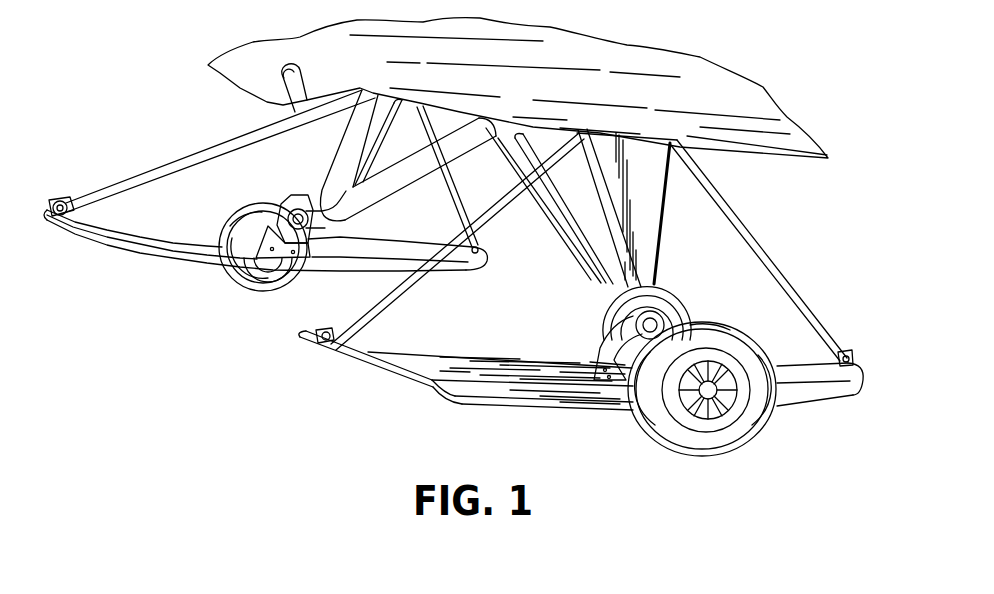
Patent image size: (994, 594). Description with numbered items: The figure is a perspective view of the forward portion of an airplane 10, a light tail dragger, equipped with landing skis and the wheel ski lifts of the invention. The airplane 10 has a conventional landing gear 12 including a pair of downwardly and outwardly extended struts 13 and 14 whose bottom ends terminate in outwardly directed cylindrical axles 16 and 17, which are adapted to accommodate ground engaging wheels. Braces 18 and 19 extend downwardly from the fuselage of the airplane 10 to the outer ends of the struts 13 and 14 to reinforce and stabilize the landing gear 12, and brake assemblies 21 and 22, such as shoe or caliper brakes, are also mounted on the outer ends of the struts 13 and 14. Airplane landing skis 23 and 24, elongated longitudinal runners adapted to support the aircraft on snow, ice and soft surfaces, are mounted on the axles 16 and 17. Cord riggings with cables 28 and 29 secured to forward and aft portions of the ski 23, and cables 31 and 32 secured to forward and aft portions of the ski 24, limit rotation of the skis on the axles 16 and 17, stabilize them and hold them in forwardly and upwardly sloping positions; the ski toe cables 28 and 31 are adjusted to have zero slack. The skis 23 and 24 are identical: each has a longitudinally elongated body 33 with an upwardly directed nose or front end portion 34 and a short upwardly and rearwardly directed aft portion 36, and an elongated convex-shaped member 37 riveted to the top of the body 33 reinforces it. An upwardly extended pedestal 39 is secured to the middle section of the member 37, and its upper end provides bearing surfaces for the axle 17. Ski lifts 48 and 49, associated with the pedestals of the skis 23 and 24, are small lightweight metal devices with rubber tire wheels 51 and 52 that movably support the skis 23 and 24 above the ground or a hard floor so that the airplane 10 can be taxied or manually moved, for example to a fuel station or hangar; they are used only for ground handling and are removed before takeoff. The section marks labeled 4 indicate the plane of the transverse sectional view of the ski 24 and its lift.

The airplane 10 is at (700, 90).
The landing gear 12 is at (683, 212).
The strut 13 is at (393, 188).
The strut 14 is at (568, 227).
The axle 16 is at (306, 266).
The axle 17 is at (660, 318).
The brace 18 is at (356, 157).
The brace 19 is at (654, 234).
The brake assembly 21 is at (294, 194).
The brake assembly 22 is at (604, 316).
The landing ski 23 is at (123, 243).
The landing ski 24 is at (431, 393).
The cable 28 is at (156, 168).
The cable 29 is at (462, 200).
The cable 31 is at (395, 292).
The cable 32 is at (800, 310).
The body 33 is at (598, 404).
The nose or front end portion 34 is at (374, 367).
The rear end or aft portion 36 is at (850, 394).
The convex-shaped member 37 is at (477, 357).
The pedestal 39 is at (636, 337).
The ski lift 48 is at (237, 289).
The ski lift 49 is at (647, 446).
The rubber tire wheel 51 is at (244, 206).
The rubber tire wheel 52 is at (707, 449).
The section line 4- 4 is at (784, 229).